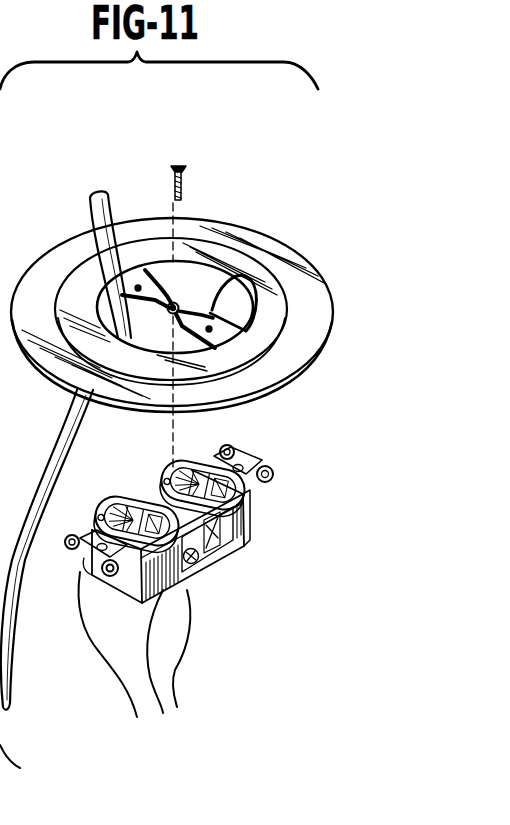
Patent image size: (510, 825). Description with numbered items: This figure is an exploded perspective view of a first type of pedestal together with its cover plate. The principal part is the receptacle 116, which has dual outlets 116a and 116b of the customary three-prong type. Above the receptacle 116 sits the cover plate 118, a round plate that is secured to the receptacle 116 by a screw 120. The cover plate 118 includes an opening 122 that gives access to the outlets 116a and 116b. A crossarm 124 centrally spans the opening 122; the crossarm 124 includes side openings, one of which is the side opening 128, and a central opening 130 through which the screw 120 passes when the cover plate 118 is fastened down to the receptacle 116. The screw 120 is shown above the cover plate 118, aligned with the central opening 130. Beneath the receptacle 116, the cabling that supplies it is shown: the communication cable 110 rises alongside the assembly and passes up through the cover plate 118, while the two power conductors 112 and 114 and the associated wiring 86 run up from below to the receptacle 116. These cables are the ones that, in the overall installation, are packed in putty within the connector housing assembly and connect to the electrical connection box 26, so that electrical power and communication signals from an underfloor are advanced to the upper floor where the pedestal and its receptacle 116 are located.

The electrical connection box 26 is at (138, 286).
The cable 86 is at (123, 690).
The communication cable 110 is at (8, 668).
The power conductor 112 is at (163, 623).
The power conductor 114 is at (185, 656).
The receptacle 116 is at (258, 522).
The outlet 116a is at (137, 500).
The outlet 116b is at (205, 464).
The cover plate 118 is at (233, 228).
The screw 120 is at (179, 164).
The opening 122 is at (158, 342).
The crossarm 124 is at (212, 309).
The side opening 128 is at (211, 329).
The central opening 130 is at (176, 305).